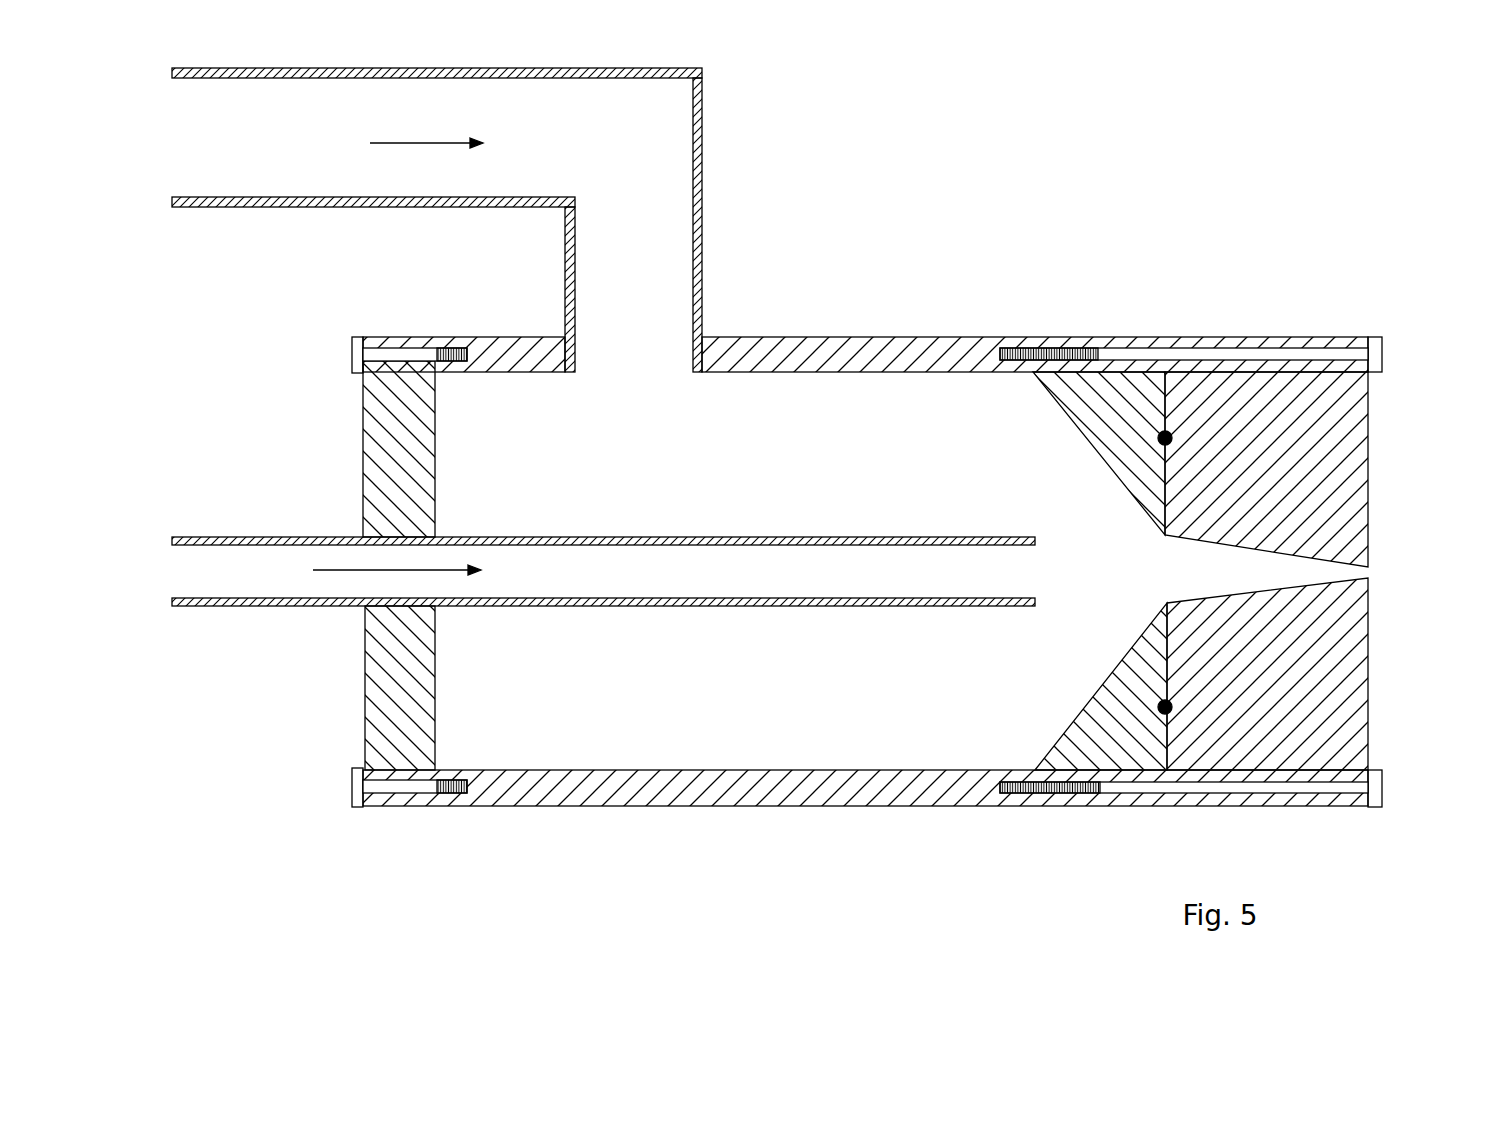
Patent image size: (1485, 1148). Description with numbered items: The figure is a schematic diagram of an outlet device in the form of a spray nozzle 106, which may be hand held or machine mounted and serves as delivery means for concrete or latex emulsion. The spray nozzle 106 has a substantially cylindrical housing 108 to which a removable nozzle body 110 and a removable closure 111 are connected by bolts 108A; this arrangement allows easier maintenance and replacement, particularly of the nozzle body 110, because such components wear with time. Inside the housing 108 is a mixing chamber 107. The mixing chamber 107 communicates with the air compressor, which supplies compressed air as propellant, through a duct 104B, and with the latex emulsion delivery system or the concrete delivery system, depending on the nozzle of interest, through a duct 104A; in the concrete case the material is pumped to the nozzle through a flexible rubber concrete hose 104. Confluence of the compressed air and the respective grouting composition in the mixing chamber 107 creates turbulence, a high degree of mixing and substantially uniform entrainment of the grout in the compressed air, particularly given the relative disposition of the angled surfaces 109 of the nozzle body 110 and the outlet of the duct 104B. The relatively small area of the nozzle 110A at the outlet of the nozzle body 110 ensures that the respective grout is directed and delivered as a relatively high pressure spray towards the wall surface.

The concrete hose 104 is at (189, 247).
The duct 104A is at (700, 208).
The duct 104B is at (248, 607).
The spray nozzle 106 is at (1115, 298).
The mixing chamber 107 is at (788, 697).
The housing 108 is at (913, 783).
The bolts 108A is at (350, 355).
The angled surfaces 109 is at (1127, 485).
The nozzle body 110 is at (1325, 500).
The nozzle 110A is at (1370, 572).
The closure 111 is at (377, 440).